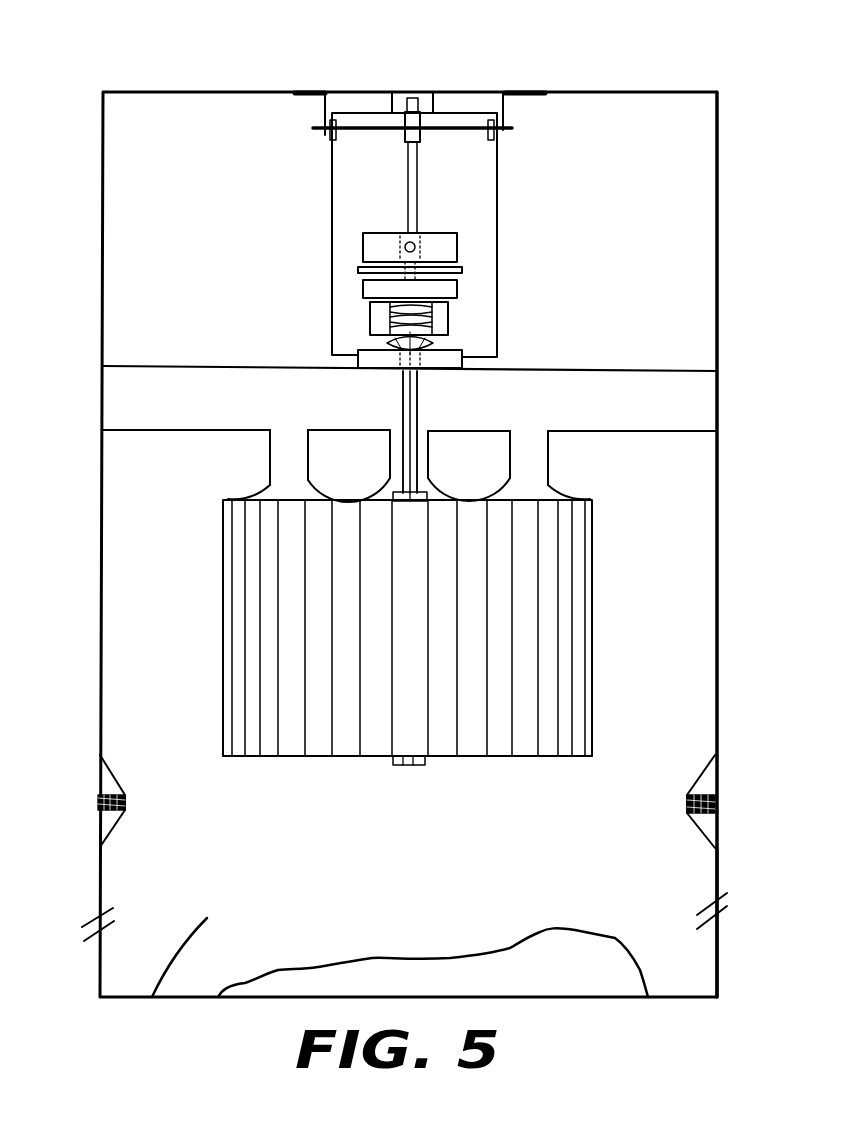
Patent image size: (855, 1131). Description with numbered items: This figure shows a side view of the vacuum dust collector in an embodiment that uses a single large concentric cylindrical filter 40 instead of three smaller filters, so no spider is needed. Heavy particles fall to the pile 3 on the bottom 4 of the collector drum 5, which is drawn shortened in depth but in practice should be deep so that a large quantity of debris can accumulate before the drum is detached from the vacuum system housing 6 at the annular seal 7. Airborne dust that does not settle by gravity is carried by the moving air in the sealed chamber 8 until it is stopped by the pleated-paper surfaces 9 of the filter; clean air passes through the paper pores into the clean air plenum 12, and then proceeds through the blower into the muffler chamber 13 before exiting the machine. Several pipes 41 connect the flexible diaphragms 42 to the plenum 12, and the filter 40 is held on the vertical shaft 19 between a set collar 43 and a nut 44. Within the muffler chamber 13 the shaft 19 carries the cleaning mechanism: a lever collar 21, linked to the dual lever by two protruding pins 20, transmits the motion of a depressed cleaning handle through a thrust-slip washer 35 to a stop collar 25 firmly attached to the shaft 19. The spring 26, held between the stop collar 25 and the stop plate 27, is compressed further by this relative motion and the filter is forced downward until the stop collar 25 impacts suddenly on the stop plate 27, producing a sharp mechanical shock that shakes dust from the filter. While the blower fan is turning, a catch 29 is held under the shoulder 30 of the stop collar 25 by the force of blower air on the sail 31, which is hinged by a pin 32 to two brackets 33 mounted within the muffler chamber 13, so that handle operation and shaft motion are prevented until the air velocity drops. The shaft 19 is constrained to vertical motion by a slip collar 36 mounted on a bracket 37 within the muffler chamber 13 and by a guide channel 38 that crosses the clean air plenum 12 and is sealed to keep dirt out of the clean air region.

The pile 3 is at (522, 943).
The bottom 4 is at (190, 946).
The collector drum 5 is at (720, 875).
The vacuum system housing 6 is at (720, 258).
The annular seal 7 is at (100, 803).
The sealed chamber 8 is at (657, 568).
The pleated-paper surfaces 9 is at (573, 665).
The clean air plenum 12 is at (640, 403).
The muffler chamber 13 is at (622, 147).
The vertical shaft 19 is at (418, 200).
The protruding pins 20 is at (457, 247).
The lever collar 21 is at (363, 245).
The stop collar 25 is at (363, 290).
The spring 26 is at (448, 318).
The stop plate 27 is at (462, 360).
The catch 29 is at (385, 342).
The shoulder 30 is at (370, 305).
The sail 31 is at (328, 198).
The pin 32 is at (513, 128).
The brackets 33 is at (323, 106).
The thrust-slip washer 35 is at (358, 270).
The slip collar 36 is at (403, 137).
The bracket 37 is at (434, 103).
The guide channel 38 is at (402, 415).
The single cylindrical filter 40 is at (342, 757).
The pipes 41 is at (270, 438).
The flexible diaphragms 42 is at (325, 481).
The set collar 43 is at (430, 466).
The nut 44 is at (425, 760).